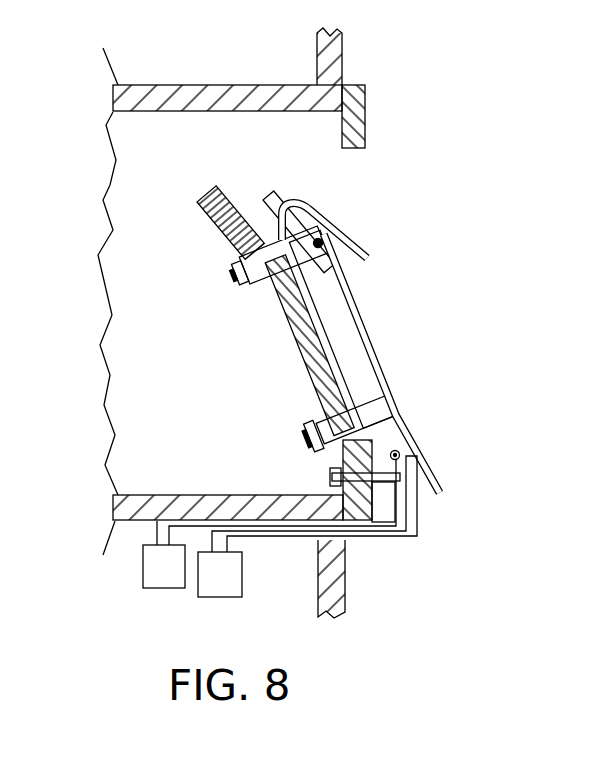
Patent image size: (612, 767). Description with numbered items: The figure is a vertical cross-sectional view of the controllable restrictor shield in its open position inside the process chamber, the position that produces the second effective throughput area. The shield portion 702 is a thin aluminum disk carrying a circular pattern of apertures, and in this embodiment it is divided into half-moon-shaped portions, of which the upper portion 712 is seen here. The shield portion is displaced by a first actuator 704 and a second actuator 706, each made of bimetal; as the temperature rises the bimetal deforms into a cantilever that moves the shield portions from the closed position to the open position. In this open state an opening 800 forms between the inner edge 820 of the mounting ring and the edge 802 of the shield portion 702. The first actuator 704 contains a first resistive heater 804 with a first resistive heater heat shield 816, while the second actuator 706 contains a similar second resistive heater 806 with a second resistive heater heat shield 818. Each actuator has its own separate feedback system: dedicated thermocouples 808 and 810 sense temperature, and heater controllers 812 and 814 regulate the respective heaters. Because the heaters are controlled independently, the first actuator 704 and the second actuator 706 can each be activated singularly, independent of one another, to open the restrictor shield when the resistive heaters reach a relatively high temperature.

The opening 800 is at (247, 187).
The edge of the shield portion 802 is at (200, 192).
The first resistive heater 804 is at (398, 456).
The second resistive heater 806 is at (323, 243).
The thermocouple 808 is at (400, 410).
The thermocouple 810 is at (236, 196).
The heater controller 812 is at (150, 572).
The heater controller 814 is at (220, 597).
The first resistive heater heat shield 816 is at (420, 435).
The second resistive heater heat shield 818 is at (305, 205).
The inner edge of the mounting ring 820 is at (365, 148).
The shield portion 702 is at (270, 347).
The first actuator 704 is at (330, 462).
The second actuator 706 is at (250, 268).
The upper portion 712 is at (213, 210).